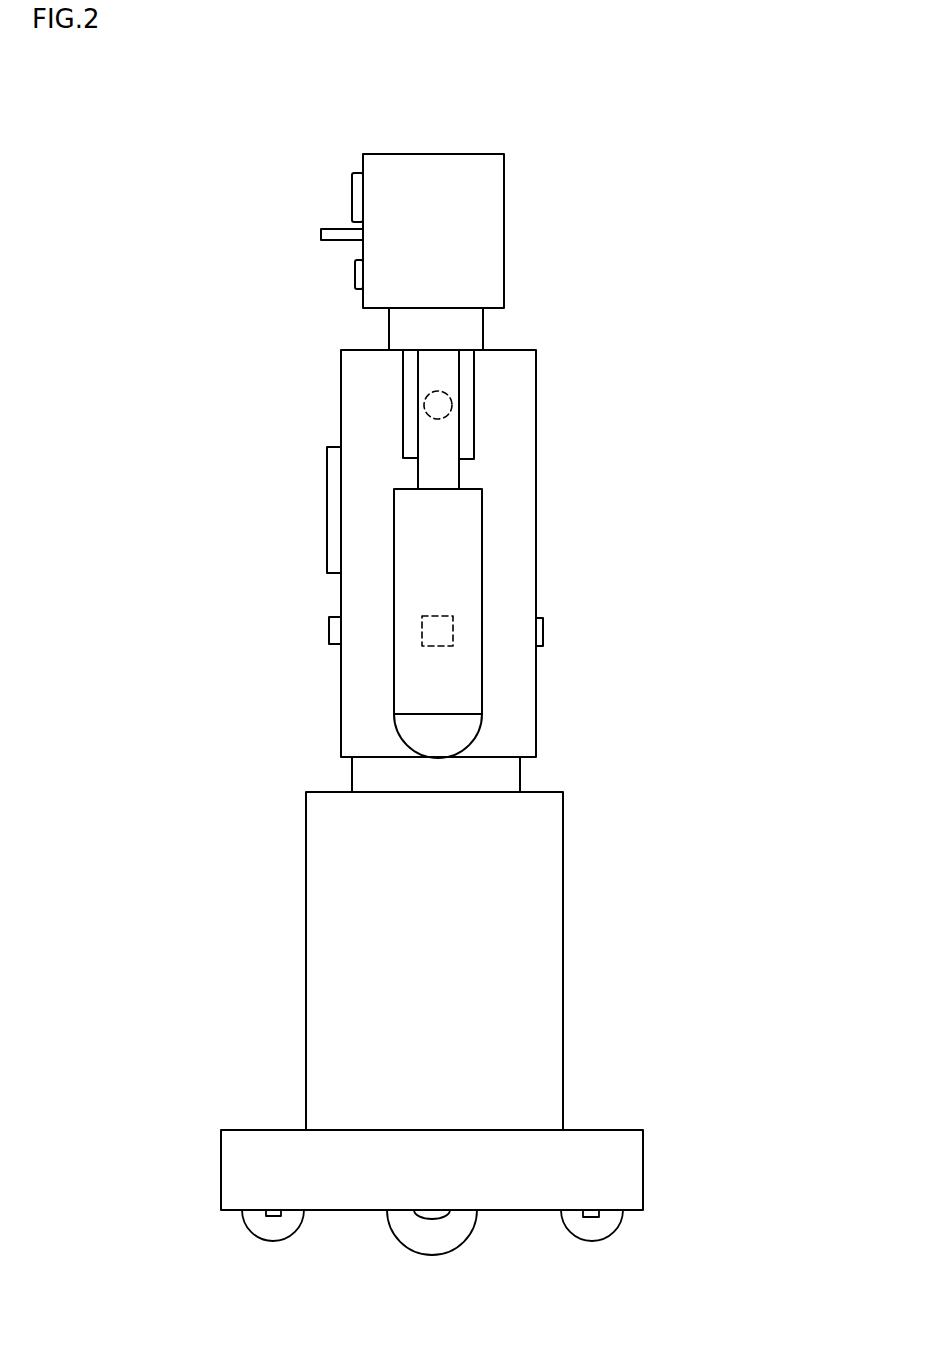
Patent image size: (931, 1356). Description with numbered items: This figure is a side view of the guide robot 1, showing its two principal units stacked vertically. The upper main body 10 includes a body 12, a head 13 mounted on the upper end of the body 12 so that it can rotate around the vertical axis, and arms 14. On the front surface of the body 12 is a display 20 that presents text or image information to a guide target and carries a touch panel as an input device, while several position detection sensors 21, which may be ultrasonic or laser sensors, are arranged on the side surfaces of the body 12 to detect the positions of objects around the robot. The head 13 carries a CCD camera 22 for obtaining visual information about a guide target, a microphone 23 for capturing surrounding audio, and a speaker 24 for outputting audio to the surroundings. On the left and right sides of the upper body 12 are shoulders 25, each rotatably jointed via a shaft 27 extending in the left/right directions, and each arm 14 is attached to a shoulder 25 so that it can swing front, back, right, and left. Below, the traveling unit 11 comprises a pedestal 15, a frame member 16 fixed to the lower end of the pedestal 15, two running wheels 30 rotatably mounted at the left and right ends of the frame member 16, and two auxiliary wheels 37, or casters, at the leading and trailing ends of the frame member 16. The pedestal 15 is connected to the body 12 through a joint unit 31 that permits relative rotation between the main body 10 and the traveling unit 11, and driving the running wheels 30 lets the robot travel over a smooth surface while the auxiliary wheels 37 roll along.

The guide robot 1 is at (597, 104).
The main body 10 is at (597, 443).
The traveling unit 11 is at (668, 1053).
The body 12 is at (524, 587).
The head 13 is at (494, 233).
The arm 14 is at (470, 535).
The pedestal 15 is at (548, 920).
The frame member 16 is at (632, 1170).
The display 20 is at (327, 517).
The position detection sensor 21 is at (329, 632).
The CCD camera 22 is at (352, 200).
The microphone 23 is at (321, 234).
The speaker 24 is at (355, 277).
The shoulder 25 is at (408, 400).
The shaft 27 is at (452, 398).
The running wheel 30 is at (437, 1230).
The joint unit 31 is at (540, 782).
The auxiliary wheel 37 is at (276, 1227).